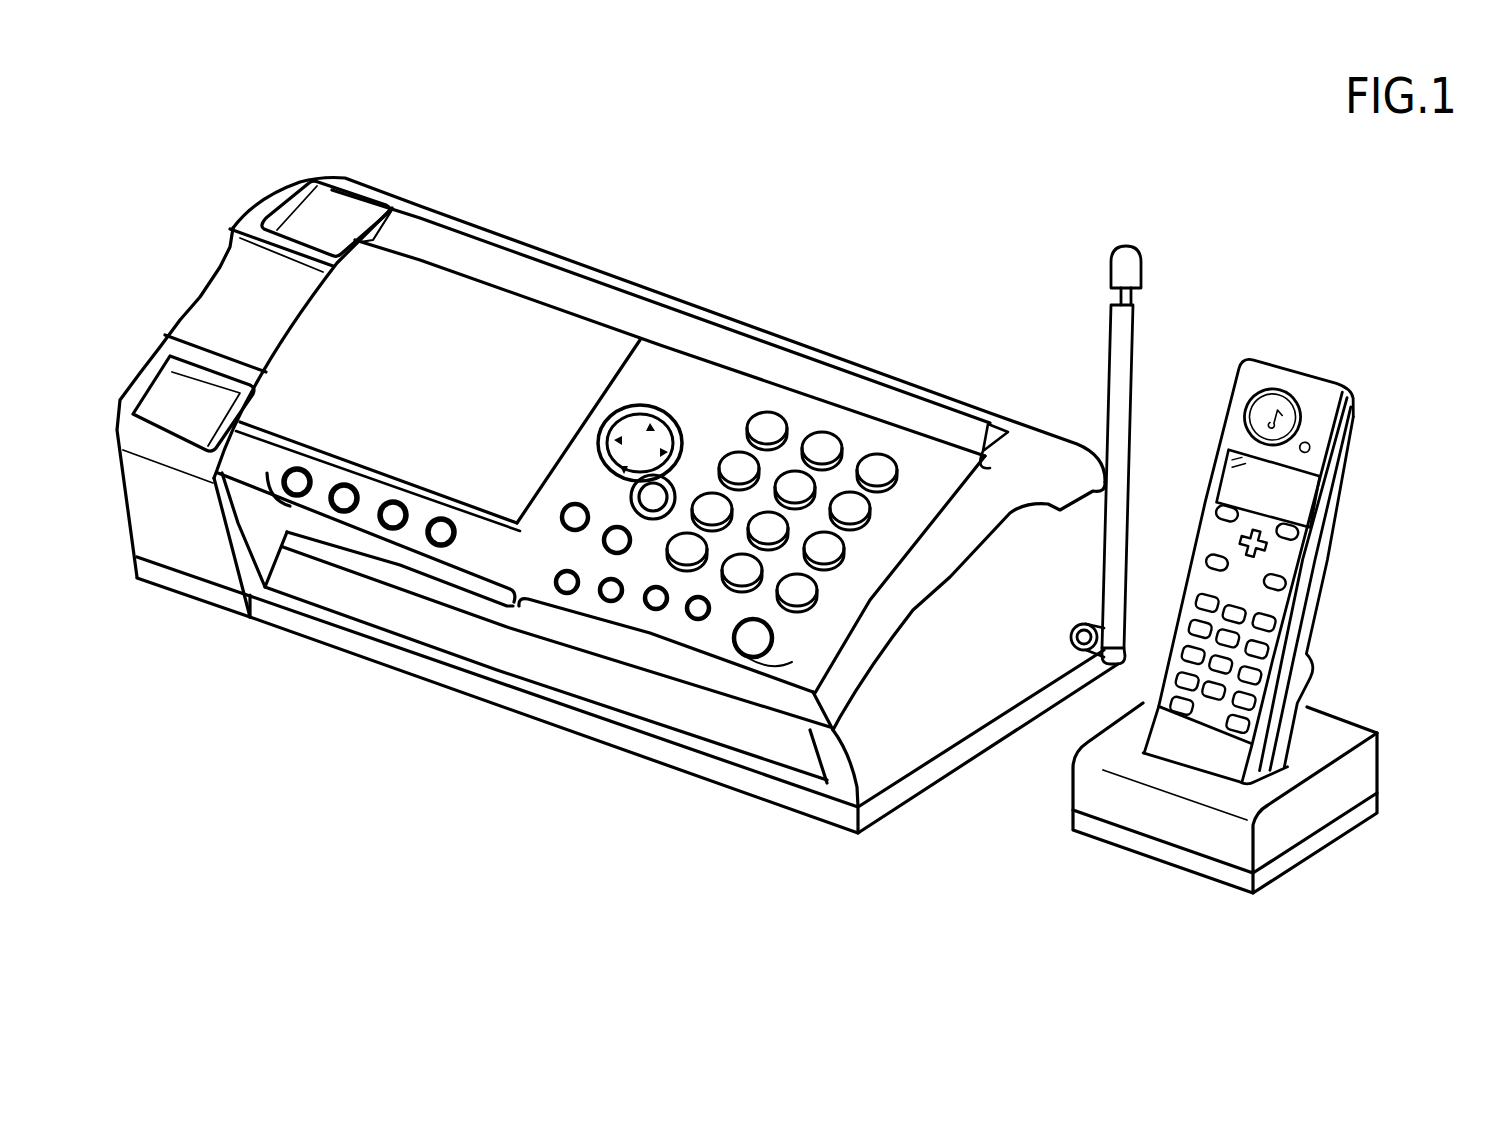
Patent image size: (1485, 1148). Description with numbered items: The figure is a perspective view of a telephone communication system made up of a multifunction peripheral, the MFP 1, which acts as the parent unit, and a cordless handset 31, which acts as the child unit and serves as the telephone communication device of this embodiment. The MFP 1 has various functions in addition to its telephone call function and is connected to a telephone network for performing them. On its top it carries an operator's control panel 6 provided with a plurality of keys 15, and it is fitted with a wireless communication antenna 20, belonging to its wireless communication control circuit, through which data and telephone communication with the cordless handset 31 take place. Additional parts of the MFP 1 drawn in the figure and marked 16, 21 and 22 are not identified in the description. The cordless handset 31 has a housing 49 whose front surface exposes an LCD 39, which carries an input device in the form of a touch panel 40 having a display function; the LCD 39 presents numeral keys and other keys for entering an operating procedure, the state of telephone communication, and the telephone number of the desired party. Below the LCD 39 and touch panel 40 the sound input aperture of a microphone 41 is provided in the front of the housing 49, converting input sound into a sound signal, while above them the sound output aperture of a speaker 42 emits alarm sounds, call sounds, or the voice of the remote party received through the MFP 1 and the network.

The multifunction peripheral 1 is at (950, 249).
The operator's control panel 6 is at (718, 401).
The keys 15 is at (514, 602).
The document tray 16 is at (438, 320).
The wireless communication antenna 20 is at (1138, 266).
The upper cover 21 is at (961, 490).
The main body case 22 is at (953, 675).
The cordless handset 31 is at (1309, 357).
The LCD 39 is at (1293, 497).
The touch panel 40 is at (1270, 489).
The microphone 41 is at (1201, 738).
The speaker 42 is at (1287, 420).
The housing 49 is at (1313, 547).